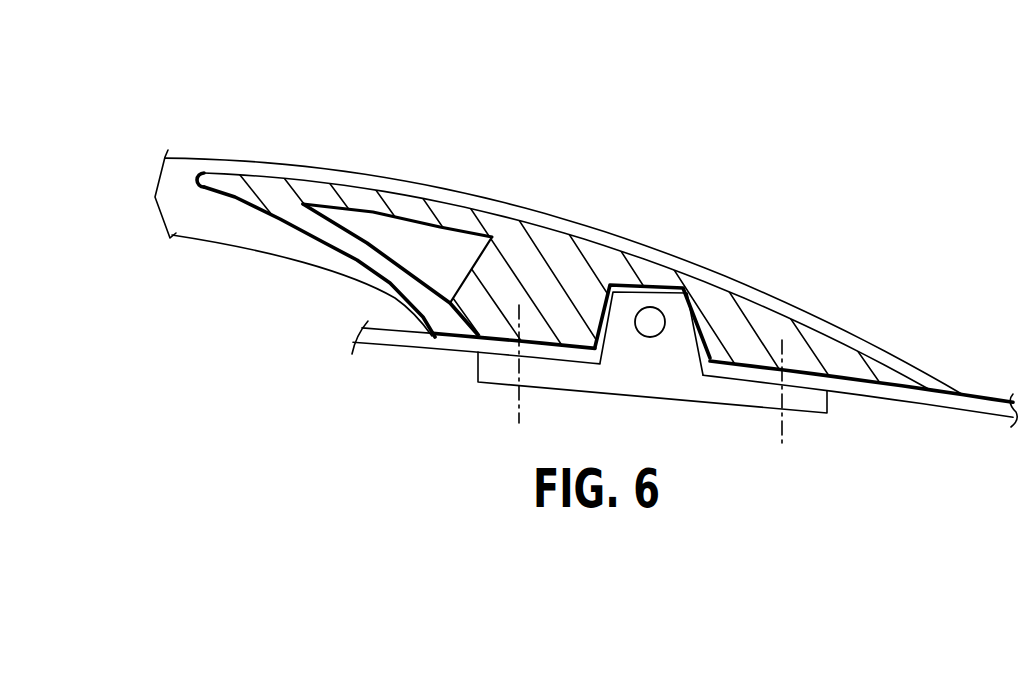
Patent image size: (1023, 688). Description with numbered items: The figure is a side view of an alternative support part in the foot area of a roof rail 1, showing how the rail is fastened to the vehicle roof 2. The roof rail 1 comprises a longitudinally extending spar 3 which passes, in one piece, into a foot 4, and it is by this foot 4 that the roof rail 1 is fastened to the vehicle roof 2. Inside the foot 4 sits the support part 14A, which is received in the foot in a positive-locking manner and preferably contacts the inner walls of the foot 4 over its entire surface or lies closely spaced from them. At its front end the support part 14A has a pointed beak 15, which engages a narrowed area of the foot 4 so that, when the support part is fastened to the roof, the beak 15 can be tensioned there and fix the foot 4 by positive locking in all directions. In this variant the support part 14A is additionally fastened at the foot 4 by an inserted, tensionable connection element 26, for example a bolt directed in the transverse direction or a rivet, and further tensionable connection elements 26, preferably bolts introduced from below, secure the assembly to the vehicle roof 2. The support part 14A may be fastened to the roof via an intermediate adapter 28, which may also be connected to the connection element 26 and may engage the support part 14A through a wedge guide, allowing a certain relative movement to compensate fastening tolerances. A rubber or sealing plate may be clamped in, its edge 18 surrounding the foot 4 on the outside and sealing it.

The roof rail 1 is at (607, 148).
The vehicle roof 2 is at (984, 400).
The spar 3 is at (186, 158).
The foot 4 is at (417, 183).
The support part 14A is at (750, 313).
The beak 15 is at (278, 190).
The edge 18 is at (441, 338).
The connection element 26 is at (656, 318).
The adapter 28 is at (661, 388).